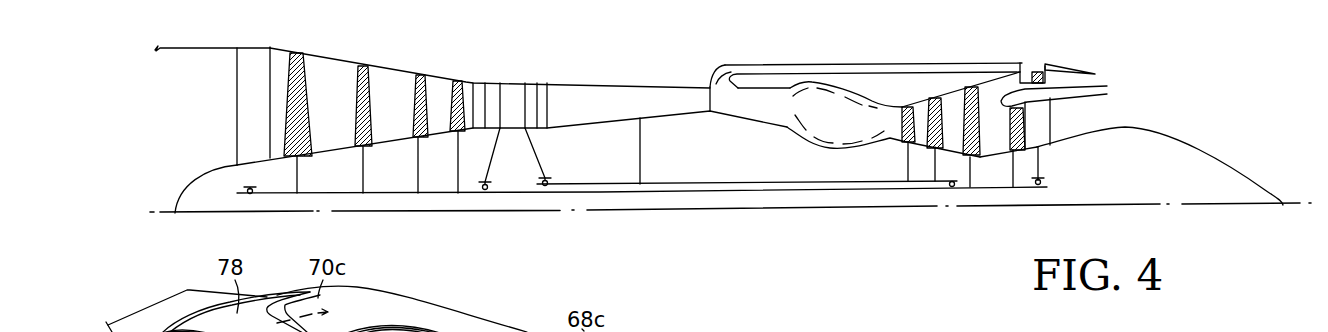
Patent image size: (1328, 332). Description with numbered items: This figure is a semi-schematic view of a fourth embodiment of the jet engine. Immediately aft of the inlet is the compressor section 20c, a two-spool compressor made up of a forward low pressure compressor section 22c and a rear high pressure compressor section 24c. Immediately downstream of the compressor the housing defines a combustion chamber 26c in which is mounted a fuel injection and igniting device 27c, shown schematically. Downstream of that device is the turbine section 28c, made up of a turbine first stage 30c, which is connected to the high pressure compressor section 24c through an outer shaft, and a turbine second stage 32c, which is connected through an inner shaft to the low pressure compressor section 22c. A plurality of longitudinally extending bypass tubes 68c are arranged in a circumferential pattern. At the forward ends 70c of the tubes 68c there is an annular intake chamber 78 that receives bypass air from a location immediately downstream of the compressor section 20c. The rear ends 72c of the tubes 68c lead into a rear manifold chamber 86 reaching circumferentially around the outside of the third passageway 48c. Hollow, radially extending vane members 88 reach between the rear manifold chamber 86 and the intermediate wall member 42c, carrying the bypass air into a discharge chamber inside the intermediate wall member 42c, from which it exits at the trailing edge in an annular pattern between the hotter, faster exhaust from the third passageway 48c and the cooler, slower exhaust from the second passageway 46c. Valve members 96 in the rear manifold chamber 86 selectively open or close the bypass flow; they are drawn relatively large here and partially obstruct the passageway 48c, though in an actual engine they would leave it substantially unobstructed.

The compressor section 20c is at (471, 51).
The low pressure compressor section 22c is at (463, 75).
The high pressure compressor section 24c is at (548, 73).
The annular intake chamber 78 is at (715, 84).
The forward ends of the tubes 70c is at (727, 68).
The bypass tubes 68c is at (822, 67).
The combustion chamber 26c is at (822, 127).
The fuel injection and igniting device 27c is at (787, 107).
The turbine first stage 30c is at (900, 140).
The turbine section 28c is at (927, 86).
The turbine second stage 32c is at (1013, 152).
The vane members 88 is at (1010, 89).
The rear ends of the tubes 72c is at (1025, 70).
The rear manifold chamber 86 is at (1043, 70).
The valve members 96 is at (1053, 68).
The intermediate wall member 42c is at (1097, 85).
The third passageway 48c is at (1093, 77).
The second passageway 46c is at (1070, 116).